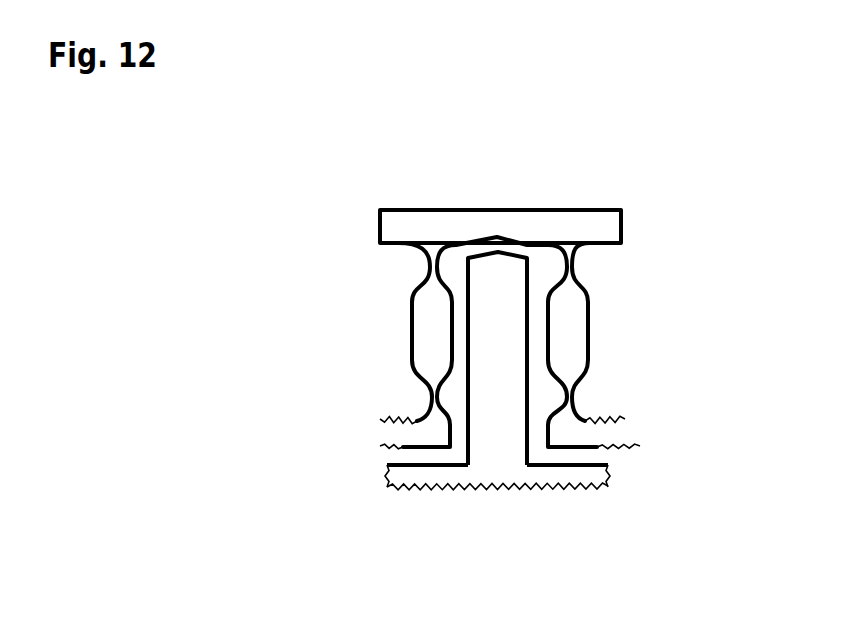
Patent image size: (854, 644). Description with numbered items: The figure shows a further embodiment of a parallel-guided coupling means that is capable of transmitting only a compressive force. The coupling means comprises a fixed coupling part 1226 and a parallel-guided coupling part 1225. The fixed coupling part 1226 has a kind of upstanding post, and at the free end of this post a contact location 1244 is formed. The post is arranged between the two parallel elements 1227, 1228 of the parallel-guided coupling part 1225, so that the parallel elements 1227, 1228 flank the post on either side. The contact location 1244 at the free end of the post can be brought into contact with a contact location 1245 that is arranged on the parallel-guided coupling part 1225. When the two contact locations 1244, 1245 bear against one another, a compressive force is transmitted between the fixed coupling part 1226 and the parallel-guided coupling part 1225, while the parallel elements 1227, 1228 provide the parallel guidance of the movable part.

The parallel-guided coupling part 1225 is at (344, 194).
The fixed coupling part 1226 is at (369, 496).
The parallel element 1227 is at (430, 330).
The parallel element 1228 is at (567, 325).
The contact location 1244 is at (483, 253).
The contact location 1245 is at (512, 240).